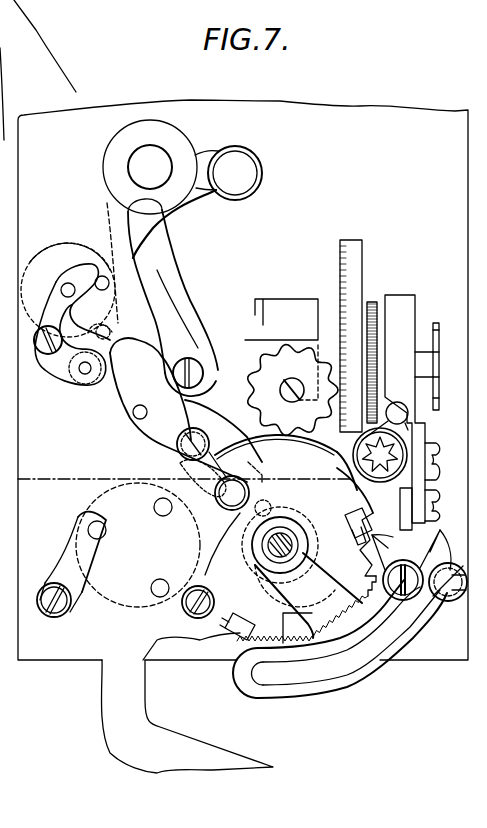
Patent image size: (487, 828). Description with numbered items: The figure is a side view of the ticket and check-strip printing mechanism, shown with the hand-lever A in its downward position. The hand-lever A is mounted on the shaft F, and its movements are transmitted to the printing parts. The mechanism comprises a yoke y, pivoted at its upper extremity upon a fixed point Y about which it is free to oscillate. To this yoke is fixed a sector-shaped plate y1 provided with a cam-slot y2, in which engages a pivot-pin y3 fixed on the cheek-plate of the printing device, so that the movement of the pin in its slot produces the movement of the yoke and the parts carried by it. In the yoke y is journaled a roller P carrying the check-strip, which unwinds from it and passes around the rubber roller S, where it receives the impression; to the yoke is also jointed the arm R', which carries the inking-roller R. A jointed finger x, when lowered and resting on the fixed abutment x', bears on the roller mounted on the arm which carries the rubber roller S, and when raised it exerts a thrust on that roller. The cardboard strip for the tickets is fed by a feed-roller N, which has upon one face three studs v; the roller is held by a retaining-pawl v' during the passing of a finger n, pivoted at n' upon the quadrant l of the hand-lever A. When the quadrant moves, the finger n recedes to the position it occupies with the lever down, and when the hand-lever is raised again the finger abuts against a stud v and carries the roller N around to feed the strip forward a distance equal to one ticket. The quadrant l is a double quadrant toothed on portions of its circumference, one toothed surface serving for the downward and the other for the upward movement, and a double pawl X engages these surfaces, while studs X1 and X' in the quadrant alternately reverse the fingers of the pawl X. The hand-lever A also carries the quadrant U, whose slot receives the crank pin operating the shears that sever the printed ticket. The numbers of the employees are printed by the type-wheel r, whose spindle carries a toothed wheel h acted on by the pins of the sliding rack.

The roller P is at (119, 229).
The fixed point Y is at (235, 173).
The yoke y is at (199, 200).
The sector-shaped plate y1 is at (104, 322).
The cam-slot y2 is at (157, 288).
The pivot-pin y3 is at (192, 366).
The rubber roller S is at (70, 340).
The inking-roller R is at (219, 431).
The arm R' is at (173, 410).
The jointed finger x is at (274, 497).
The fixed abutment x' is at (182, 474).
The finger n is at (262, 466).
The pivot of finger n' is at (230, 509).
The quadrant l is at (286, 462).
The shaft F is at (284, 537).
The double pawl X is at (406, 544).
The stud X1 is at (315, 537).
The stud X' is at (290, 578).
The feed-roller N is at (138, 545).
The stud v is at (132, 549).
The retaining-pawl v' is at (150, 616).
The quadrant U is at (393, 637).
The hand-lever A is at (187, 703).
The type-wheel r is at (363, 253).
The toothed wheel h is at (436, 323).